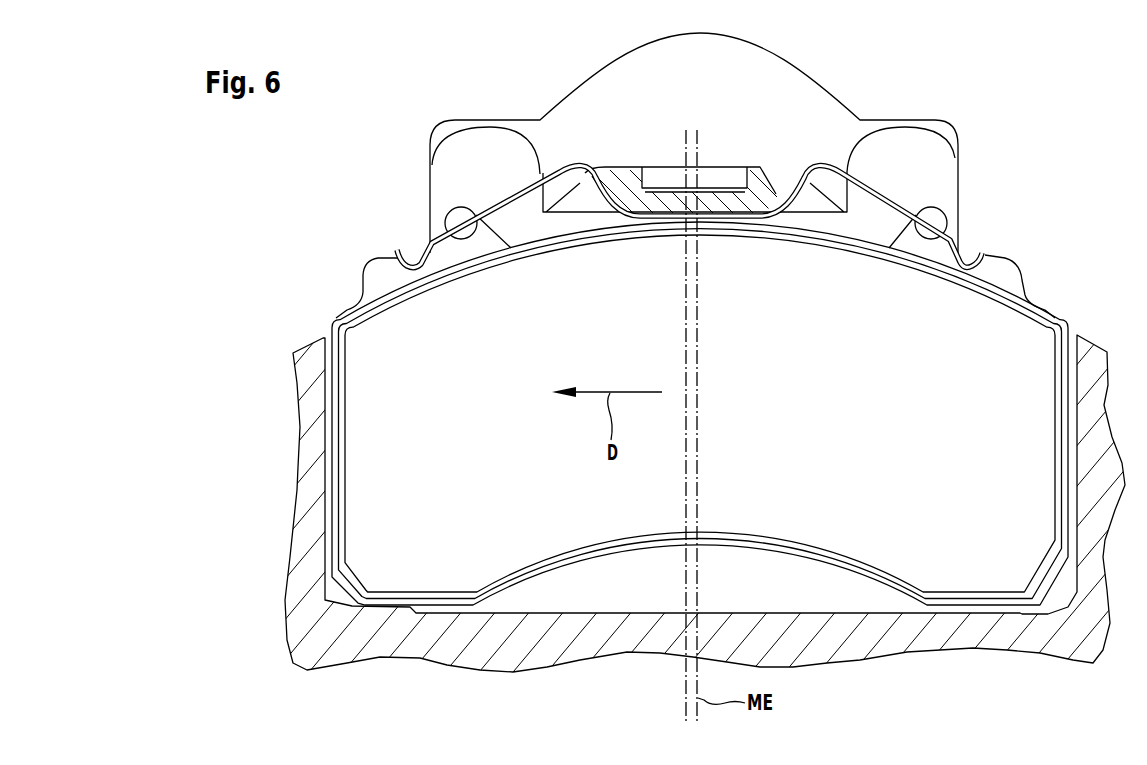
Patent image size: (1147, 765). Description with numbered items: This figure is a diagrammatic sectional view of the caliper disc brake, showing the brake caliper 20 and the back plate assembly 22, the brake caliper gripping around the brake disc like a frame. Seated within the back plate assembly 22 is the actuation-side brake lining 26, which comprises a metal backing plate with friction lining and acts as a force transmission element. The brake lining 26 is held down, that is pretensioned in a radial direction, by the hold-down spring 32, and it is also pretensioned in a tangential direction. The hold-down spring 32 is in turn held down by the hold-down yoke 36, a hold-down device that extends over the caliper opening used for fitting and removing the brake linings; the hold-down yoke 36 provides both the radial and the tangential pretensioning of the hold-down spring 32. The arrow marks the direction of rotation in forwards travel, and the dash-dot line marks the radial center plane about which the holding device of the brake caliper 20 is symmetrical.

The brake caliper 20 is at (558, 118).
The back plate assembly 22 is at (1013, 643).
The actuation-side brake lining 26 is at (1022, 340).
The hold-down spring 32 is at (845, 165).
The hold-down yoke 36 is at (723, 170).